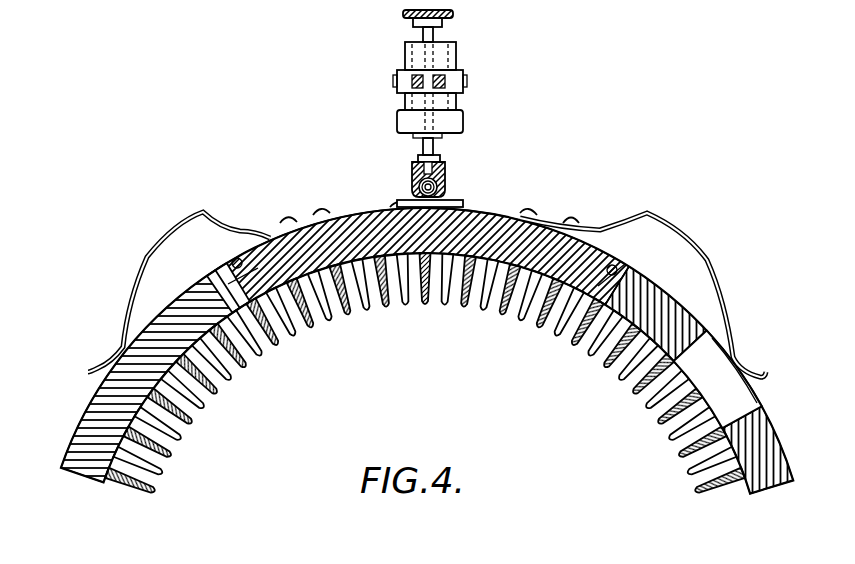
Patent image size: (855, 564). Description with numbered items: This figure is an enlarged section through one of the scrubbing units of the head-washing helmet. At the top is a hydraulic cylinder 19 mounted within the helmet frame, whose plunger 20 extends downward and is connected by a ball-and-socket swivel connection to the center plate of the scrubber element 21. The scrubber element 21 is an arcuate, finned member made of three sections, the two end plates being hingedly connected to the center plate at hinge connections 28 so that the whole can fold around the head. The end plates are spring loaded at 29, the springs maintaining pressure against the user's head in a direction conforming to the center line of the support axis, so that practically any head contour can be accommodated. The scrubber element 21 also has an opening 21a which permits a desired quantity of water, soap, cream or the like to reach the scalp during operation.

The hydraulic cylinder 19 is at (458, 57).
The plunger 20 is at (435, 145).
The scrubber element 21 is at (363, 198).
The opening 21a is at (757, 411).
The hinge connection 28 is at (237, 261).
The spring loading 29 is at (148, 257).